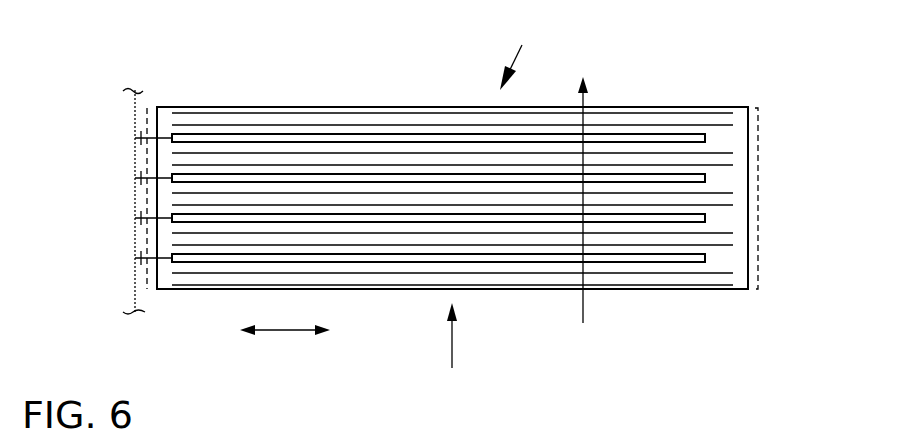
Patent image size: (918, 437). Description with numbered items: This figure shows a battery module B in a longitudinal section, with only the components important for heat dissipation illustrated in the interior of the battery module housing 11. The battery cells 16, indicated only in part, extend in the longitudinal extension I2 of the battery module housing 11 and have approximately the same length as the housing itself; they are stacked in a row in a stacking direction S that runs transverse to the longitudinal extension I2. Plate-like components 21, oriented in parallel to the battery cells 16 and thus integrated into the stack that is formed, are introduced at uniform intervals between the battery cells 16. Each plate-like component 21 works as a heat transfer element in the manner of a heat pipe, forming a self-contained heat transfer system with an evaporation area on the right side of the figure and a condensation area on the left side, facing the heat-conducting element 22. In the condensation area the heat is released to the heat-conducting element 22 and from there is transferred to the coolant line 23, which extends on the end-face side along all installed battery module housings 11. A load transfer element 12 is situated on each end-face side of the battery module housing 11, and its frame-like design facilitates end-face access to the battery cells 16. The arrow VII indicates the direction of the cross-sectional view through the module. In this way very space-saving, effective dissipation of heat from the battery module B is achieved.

The battery module housing 11 is at (690, 107).
The load transfer element 12 is at (145, 283).
The battery cells 16 is at (331, 192).
The plate-like components 21 is at (248, 180).
The heat-conducting elements 22 is at (140, 173).
The coolant line 23 is at (135, 105).
The battery module B is at (519, 51).
The stacking direction S is at (583, 305).
The section view direction VII is at (463, 340).
The longitudinal extension I2 is at (283, 330).